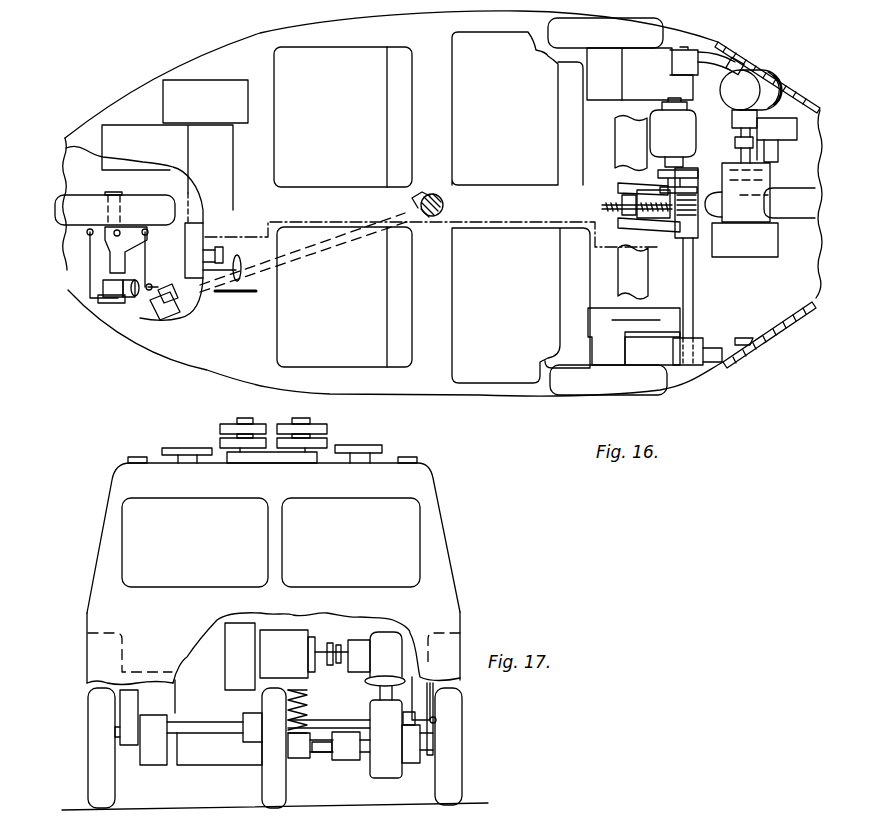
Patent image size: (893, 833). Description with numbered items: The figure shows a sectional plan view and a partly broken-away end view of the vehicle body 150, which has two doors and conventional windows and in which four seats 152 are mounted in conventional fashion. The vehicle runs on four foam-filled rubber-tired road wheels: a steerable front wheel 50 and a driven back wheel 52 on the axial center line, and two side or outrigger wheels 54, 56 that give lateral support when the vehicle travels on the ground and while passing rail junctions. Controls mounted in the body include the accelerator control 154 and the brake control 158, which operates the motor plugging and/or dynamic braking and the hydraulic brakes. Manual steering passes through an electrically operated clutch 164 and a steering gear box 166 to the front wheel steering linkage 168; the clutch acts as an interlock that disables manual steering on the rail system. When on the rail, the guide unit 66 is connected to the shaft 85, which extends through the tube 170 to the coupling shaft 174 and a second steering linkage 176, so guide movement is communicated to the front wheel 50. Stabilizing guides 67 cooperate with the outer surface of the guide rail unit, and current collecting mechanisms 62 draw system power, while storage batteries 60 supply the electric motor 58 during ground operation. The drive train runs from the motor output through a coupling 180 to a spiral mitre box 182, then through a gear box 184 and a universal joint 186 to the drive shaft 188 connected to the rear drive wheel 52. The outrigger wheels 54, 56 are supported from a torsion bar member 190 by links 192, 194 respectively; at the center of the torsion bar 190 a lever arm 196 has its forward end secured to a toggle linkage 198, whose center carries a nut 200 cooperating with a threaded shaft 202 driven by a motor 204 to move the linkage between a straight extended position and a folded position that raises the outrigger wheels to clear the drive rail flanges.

In FIG. 16, the steerable front wheel 50 is at (80, 0).
In FIG. 16, the driven back wheel 52 is at (811, 216).
In FIG. 17, the driven back wheel 52 is at (266, 784).
In FIG. 16, the outrigger wheel 54 is at (600, 393).
In FIG. 17, the outrigger wheel 54 is at (90, 782).
In FIG. 16, the outrigger wheel 56 is at (648, 30).
In FIG. 17, the outrigger wheel 56 is at (450, 762).
In FIG. 16, the electric motor 58 is at (762, 246).
In FIG. 17, the electric motor 58 is at (280, 630).
In FIG. 16, the storage batteries 60 is at (153, 107).
In FIG. 17, the current collecting mechanisms 62 is at (140, 447).
In FIG. 17, the guide unit 66 is at (280, 458).
In FIG. 17, the stabilizing guides 67 is at (198, 430).
In FIG. 16, the shaft 85 is at (437, 195).
In FIG. 16, the vehicle body 150 is at (215, 48).
In FIG. 17, the vehicle body 150 is at (410, 508).
In FIG. 16, the seats 152 is at (378, 44).
In FIG. 16, the accelerator control 154 is at (215, 240).
In FIG. 16, the brake control 158 is at (240, 282).
In FIG. 16, the electrically operated clutch 164 is at (127, 299).
In FIG. 16, the steering gear box 166 is at (103, 291).
In FIG. 16, the front wheel steering linkage 168 is at (89, 265).
In FIG. 16, the tube 170 is at (447, 210).
In FIG. 16, the coupling shaft 174 is at (190, 299).
In FIG. 16, the second steering linkage 176 is at (152, 246).
In FIG. 16, the coupling 180 is at (736, 144).
In FIG. 17, the coupling 180 is at (330, 642).
In FIG. 16, the spiral mitre box 182 is at (735, 97).
In FIG. 17, the spiral mitre box 182 is at (396, 644).
In FIG. 17, the gear box 184 is at (383, 768).
In FIG. 16, the universal joint 186 is at (781, 128).
In FIG. 17, the universal joint 186 is at (345, 735).
In FIG. 16, the drive shaft 188 is at (779, 155).
In FIG. 17, the drive shaft 188 is at (325, 755).
In FIG. 16, the torsion bar member 190 is at (692, 305).
In FIG. 17, the torsion bar member 190 is at (204, 724).
In FIG. 16, the link 192 is at (668, 330).
In FIG. 17, the link 192 is at (131, 700).
In FIG. 16, the link 194 is at (656, 82).
In FIG. 17, the link 194 is at (420, 695).
In FIG. 16, the lever arm 196 is at (668, 246).
In FIG. 16, the toggle linkage 198 is at (614, 222).
In FIG. 16, the nut 200 is at (617, 149).
In FIG. 16, the threaded shaft 202 is at (600, 207).
In FIG. 16, the motor 204 is at (650, 133).